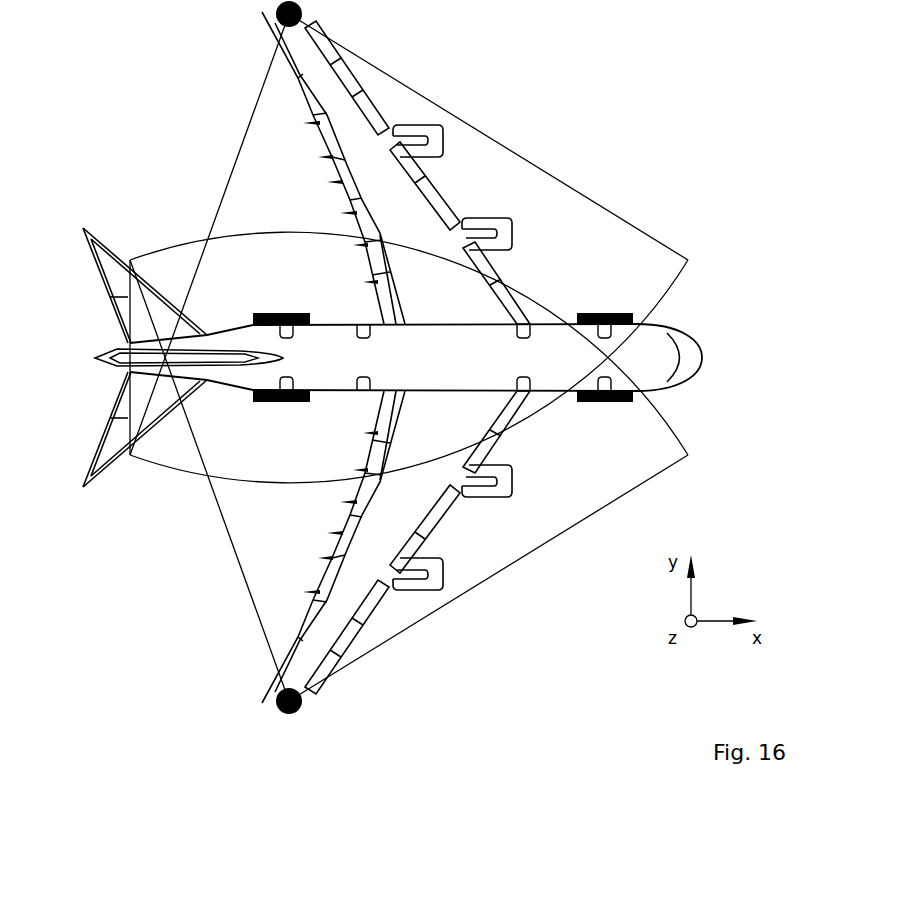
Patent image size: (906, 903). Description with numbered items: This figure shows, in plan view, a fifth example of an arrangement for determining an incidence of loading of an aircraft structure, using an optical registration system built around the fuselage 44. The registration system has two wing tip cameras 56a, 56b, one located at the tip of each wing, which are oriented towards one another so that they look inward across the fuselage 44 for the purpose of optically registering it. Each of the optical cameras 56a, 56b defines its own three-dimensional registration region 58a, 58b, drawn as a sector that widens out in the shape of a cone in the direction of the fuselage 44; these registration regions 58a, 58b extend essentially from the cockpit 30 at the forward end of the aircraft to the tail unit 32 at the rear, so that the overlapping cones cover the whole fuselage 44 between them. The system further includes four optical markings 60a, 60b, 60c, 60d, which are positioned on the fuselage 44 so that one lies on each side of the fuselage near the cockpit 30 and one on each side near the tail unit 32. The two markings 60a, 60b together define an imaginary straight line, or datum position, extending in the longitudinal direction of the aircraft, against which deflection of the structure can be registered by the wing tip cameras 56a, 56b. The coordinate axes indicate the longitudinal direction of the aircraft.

The cockpit 30 is at (718, 358).
The tail unit 32 is at (86, 441).
The fuselage 44 is at (547, 355).
The wing tip camera 56a is at (303, 697).
The wing tip camera 56b is at (303, 17).
The 3-dimensional registration region 58a is at (257, 565).
The 3-dimensional registration region 58b is at (257, 135).
The optical marking 60a is at (662, 440).
The optical marking 60b is at (265, 401).
The optical marking 60c is at (627, 312).
The optical marking 60d is at (270, 313).